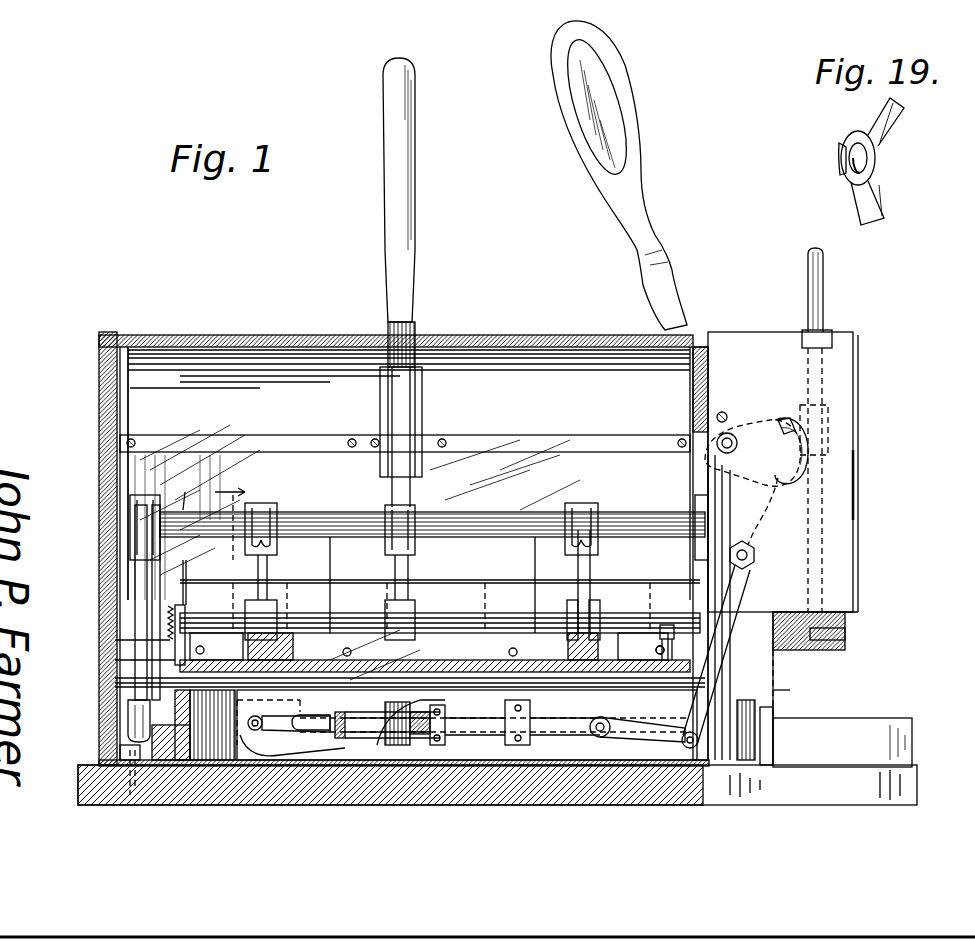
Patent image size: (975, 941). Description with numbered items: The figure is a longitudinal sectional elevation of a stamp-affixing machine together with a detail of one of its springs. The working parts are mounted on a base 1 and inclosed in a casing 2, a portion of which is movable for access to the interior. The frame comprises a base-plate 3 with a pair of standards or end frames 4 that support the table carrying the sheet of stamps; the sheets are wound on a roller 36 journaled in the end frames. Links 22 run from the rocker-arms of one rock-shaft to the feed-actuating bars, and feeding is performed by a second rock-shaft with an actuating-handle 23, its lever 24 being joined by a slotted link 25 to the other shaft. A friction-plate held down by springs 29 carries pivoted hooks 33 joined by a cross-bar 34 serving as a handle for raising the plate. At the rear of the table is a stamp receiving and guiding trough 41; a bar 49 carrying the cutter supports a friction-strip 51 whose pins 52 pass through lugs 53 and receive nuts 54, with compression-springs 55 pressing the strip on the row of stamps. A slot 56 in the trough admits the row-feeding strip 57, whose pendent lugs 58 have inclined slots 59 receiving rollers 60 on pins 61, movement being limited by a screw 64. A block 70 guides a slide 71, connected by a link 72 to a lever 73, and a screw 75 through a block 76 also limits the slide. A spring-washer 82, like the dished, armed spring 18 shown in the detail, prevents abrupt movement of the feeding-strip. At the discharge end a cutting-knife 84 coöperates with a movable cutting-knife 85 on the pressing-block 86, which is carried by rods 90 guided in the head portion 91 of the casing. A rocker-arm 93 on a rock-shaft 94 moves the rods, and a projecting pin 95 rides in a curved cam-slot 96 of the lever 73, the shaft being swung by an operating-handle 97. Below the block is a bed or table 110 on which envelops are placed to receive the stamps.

In FIG. 1, the base 1 is at (78, 776).
In FIG. 1, the casing 2 is at (99, 486).
In FIG. 1, the base-plate 3 is at (450, 775).
In FIG. 1, the standards or end frames 4 is at (697, 502).
In FIG. 19, the spring 18 is at (842, 185).
In FIG. 1, the links 22 is at (320, 515).
In FIG. 1, the actuating-handle 23 is at (397, 228).
In FIG. 1, the lever 24 is at (140, 620).
In FIG. 1, the slotted link 25 is at (130, 700).
In FIG. 1, the springs 29 is at (185, 612).
In FIG. 1, the hooks 33 is at (330, 582).
In FIG. 1, the cross-bar 34 is at (468, 583).
In FIG. 1, the roller 36 is at (440, 608).
In FIG. 1, the stamp receiving and guiding trough 41 is at (405, 680).
In FIG. 1, the bar 49 is at (480, 678).
In FIG. 1, the friction-strip 51 is at (440, 680).
In FIG. 1, the pins 52 is at (670, 626).
In FIG. 1, the lugs 53 is at (205, 652).
In FIG. 1, the nuts 54 is at (185, 630).
In FIG. 1, the compression-springs 55 is at (115, 660).
In FIG. 1, the slot 56 is at (340, 734).
In FIG. 1, the row-feeding strip 57 is at (284, 712).
In FIG. 1, the pendent lugs 58 is at (188, 770).
In FIG. 1, the inclined slots 59 is at (300, 745).
In FIG. 1, the rollers 60 is at (256, 716).
In FIG. 1, the pins 61 is at (296, 714).
In FIG. 1, the screw 64 is at (128, 733).
In FIG. 1, the block 70 is at (532, 703).
In FIG. 1, the slide 71 is at (475, 718).
In FIG. 1, the link 72 is at (640, 765).
In FIG. 1, the lever 73 is at (780, 510).
In FIG. 1, the screw 75 is at (407, 714).
In FIG. 1, the block 76 is at (440, 705).
In FIG. 1, the spring-washer 82 is at (535, 760).
In FIG. 1, the cutting-knife 84 is at (790, 685).
In FIG. 1, the movable cutting-knife 85 is at (778, 640).
In FIG. 1, the pressing-block 86 is at (845, 634).
In FIG. 1, the rods 90 is at (823, 283).
In FIG. 1, the head portion 91 is at (801, 548).
In FIG. 1, the rocker-arm 93 is at (752, 430).
In FIG. 1, the rock-shaft 94 is at (728, 440).
In FIG. 1, the projecting pin 95 is at (788, 417).
In FIG. 1, the curved cam-slot 96 is at (795, 478).
In FIG. 1, the operating-handle 97 is at (640, 226).
In FIG. 1, the bed or table 110 is at (858, 723).